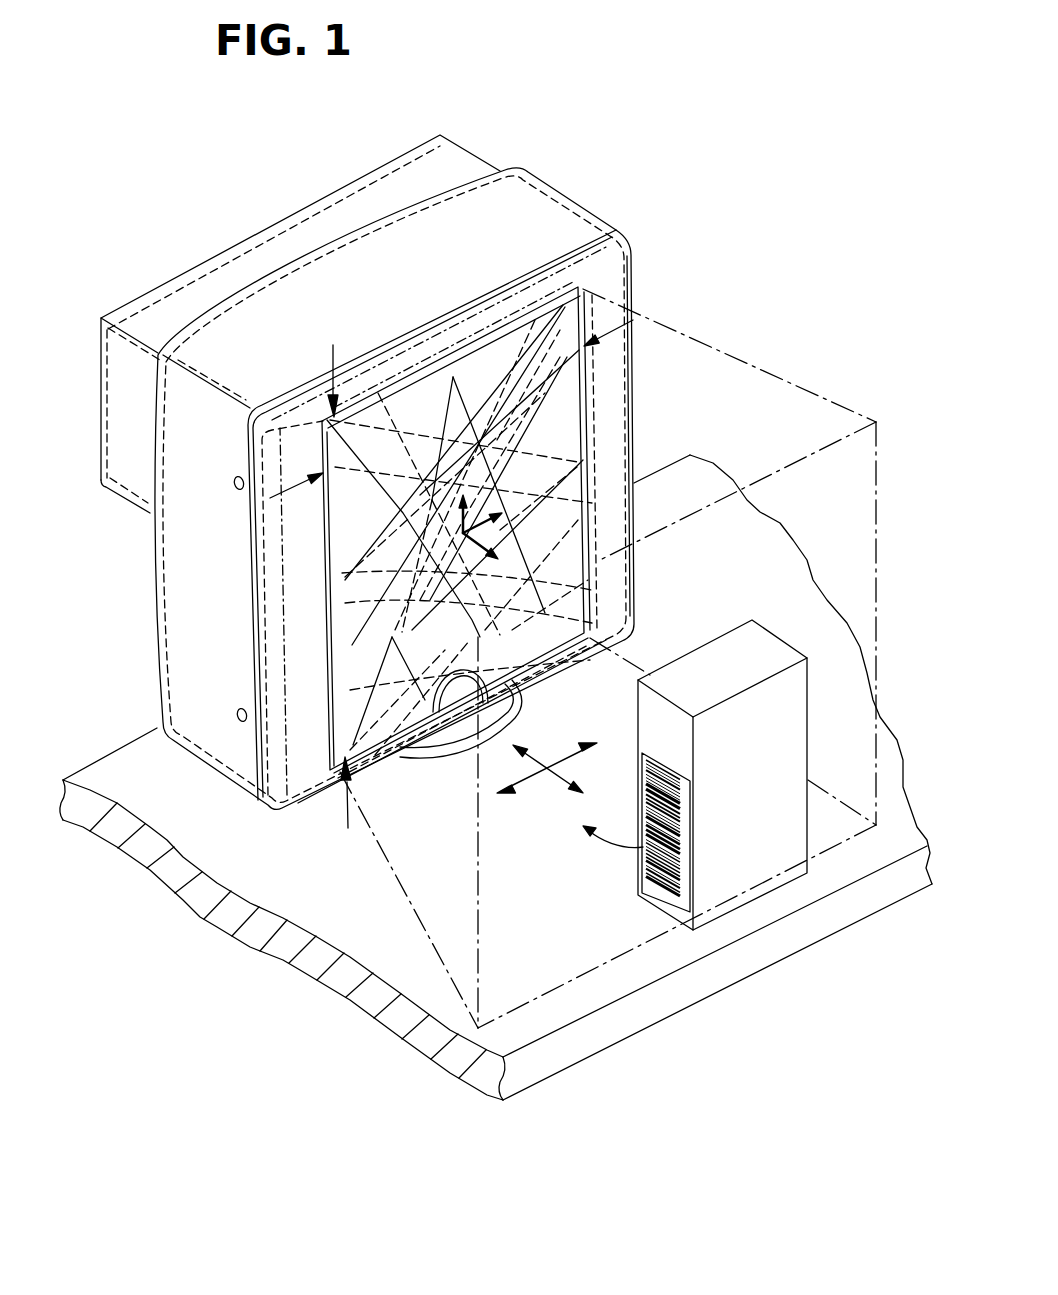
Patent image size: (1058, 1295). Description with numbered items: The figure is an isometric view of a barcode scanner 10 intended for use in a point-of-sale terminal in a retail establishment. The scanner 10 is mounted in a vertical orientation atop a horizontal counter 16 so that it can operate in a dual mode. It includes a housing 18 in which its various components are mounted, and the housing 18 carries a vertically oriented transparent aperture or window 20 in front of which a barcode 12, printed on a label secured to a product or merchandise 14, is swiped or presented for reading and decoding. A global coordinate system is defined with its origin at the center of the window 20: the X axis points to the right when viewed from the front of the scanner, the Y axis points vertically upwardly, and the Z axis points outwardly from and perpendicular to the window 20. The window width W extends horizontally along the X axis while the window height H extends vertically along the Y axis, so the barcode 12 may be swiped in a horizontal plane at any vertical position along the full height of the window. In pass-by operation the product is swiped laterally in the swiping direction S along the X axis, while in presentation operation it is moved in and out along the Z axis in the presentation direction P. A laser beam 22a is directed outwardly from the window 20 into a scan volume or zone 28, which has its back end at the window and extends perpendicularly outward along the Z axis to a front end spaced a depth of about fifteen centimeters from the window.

The barcode scanner 10 is at (665, 137).
The barcode 12 is at (660, 892).
The product or merchandise 14 is at (793, 738).
The counter 16 is at (133, 762).
The housing 18 is at (532, 212).
The window 20 is at (352, 666).
The laser beam 22a is at (352, 614).
The scan volume or zone 28 is at (762, 371).
The window height H is at (333, 355).
The window width W is at (612, 333).
The X axis X is at (483, 500).
The Y axis Y is at (462, 520).
The Z axis Z is at (486, 540).
The presentation direction arrow P is at (538, 760).
The swiping direction arrow S is at (528, 776).